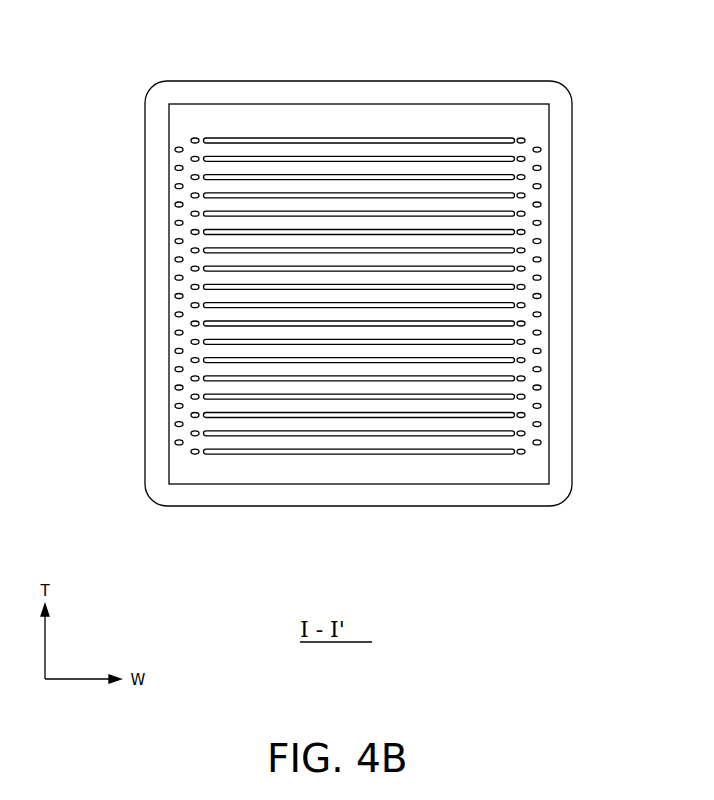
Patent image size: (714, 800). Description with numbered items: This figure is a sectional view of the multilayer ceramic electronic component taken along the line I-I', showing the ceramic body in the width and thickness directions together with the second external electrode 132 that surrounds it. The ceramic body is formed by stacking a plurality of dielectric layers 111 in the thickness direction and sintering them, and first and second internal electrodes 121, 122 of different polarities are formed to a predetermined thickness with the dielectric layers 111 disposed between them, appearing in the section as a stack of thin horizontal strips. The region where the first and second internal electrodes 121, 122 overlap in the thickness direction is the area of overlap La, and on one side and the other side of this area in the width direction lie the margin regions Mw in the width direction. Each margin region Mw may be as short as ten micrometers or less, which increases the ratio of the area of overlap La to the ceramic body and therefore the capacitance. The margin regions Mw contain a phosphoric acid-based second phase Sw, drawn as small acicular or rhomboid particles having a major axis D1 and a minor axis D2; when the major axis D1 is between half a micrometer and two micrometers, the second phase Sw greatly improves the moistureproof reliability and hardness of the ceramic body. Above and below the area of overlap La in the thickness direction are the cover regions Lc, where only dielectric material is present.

The dielectric layer 111 is at (404, 104).
The second external electrode 132 is at (490, 82).
The first internal electrode 121 is at (297, 432).
The second internal electrode 122 is at (376, 453).
The phosphoric acid-based second phase Sw is at (540, 198).
The cover region Lc is at (116, 484).
The area of overlap La is at (89, 286).
The margin region in the width direction Mw is at (169, 490).
The major axis D1 is at (523, 443).
The minor axis D2 is at (523, 450).